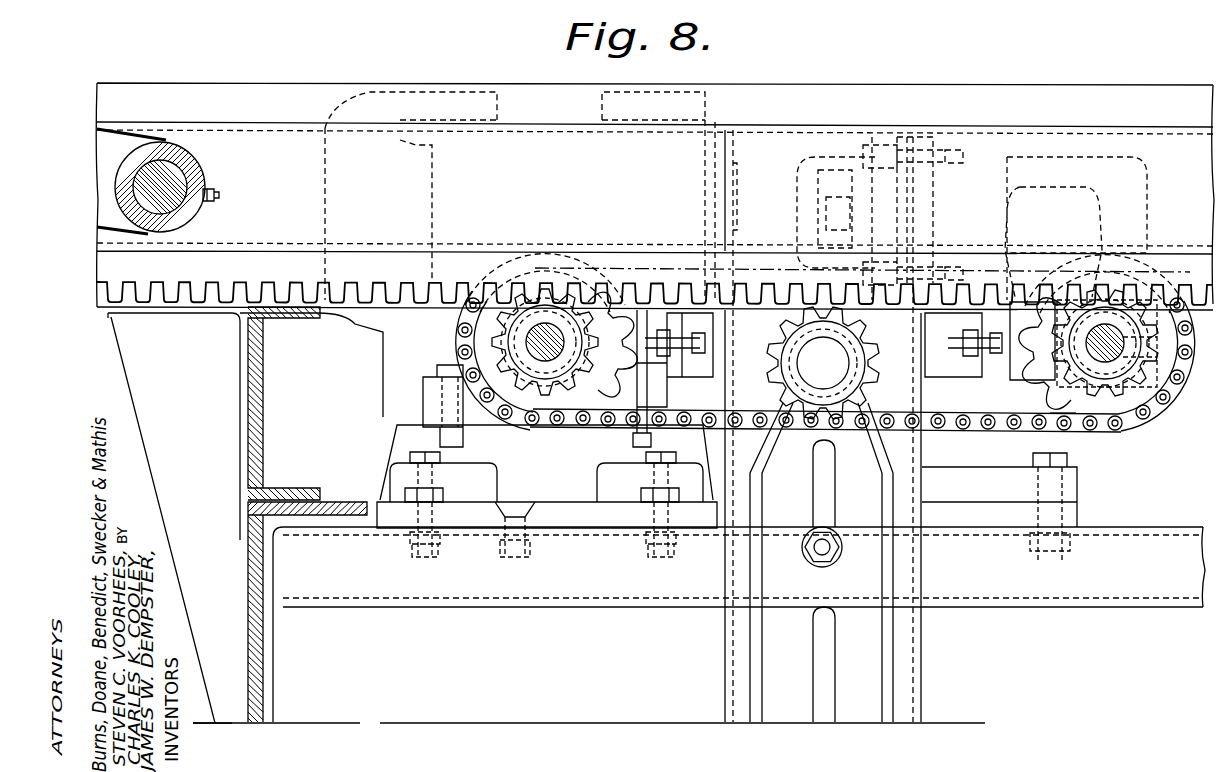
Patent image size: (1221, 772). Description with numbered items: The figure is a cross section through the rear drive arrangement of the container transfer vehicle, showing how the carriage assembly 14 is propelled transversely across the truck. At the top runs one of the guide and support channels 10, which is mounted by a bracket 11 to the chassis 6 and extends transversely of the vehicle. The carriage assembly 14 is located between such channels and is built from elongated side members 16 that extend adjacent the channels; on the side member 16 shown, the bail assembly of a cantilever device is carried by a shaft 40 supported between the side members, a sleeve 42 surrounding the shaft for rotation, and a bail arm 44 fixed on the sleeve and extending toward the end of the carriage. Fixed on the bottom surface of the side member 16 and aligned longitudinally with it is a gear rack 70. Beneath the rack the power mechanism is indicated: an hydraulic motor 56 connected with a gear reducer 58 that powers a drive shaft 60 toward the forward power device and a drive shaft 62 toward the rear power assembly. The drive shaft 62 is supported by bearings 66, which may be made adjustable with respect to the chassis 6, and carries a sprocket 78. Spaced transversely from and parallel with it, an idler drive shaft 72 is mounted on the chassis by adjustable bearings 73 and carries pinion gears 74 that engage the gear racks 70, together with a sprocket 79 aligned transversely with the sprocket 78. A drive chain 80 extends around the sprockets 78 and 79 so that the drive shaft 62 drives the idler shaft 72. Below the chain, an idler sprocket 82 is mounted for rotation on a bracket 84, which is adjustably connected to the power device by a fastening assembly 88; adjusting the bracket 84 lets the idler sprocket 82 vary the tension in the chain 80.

The chassis 6 is at (322, 500).
The guide and support channel 10 is at (276, 84).
The bracket 11 is at (127, 378).
The carriage assembly 14 is at (171, 112).
The side member 16 is at (1000, 124).
The shaft 40 is at (186, 171).
The sleeve 42 is at (216, 191).
The bail arm 44 is at (105, 160).
The hydraulic motor 56 is at (1063, 155).
The gear reducer 58 is at (355, 320).
The drive shaft 60 is at (462, 344).
The drive shaft 62 is at (540, 362).
The bearing 66 is at (668, 386).
The gear rack 70 is at (103, 273).
The idler drive shaft 72 is at (1162, 399).
The adjustable bearing 73 is at (1013, 372).
The pinion gear 74 is at (1120, 366).
The sprocket 78 is at (423, 372).
The sprocket 79 is at (1060, 412).
The drive chain 80 is at (647, 270).
The idler sprocket 82 is at (797, 362).
The bracket 84 is at (765, 473).
The fastening assembly 88 is at (812, 557).